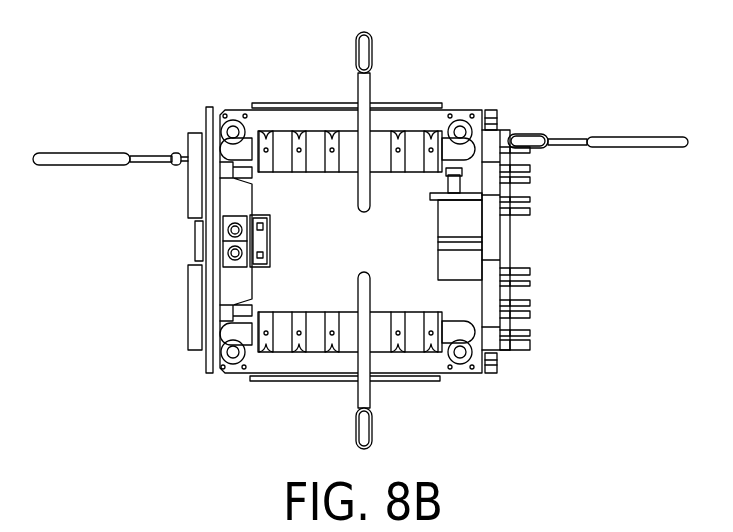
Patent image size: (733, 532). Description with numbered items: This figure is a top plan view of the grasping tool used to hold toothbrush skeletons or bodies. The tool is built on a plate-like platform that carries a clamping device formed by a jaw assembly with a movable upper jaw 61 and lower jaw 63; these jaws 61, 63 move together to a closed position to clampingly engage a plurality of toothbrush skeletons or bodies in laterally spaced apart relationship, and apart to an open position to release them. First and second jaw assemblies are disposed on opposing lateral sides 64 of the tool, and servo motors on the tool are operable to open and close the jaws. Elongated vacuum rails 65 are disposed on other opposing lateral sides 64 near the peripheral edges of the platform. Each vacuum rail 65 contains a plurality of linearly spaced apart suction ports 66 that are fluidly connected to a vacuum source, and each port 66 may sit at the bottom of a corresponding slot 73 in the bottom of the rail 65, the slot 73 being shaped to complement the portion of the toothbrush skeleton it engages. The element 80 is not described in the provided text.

The upper jaw 61 is at (557, 203).
The lower jaw 63 is at (177, 363).
The lateral sides 64 is at (426, 79).
The vacuum rail 65 is at (378, 343).
The suction port 66 is at (332, 336).
The slot 73 is at (403, 337).
The locking pin 80 is at (357, 62).